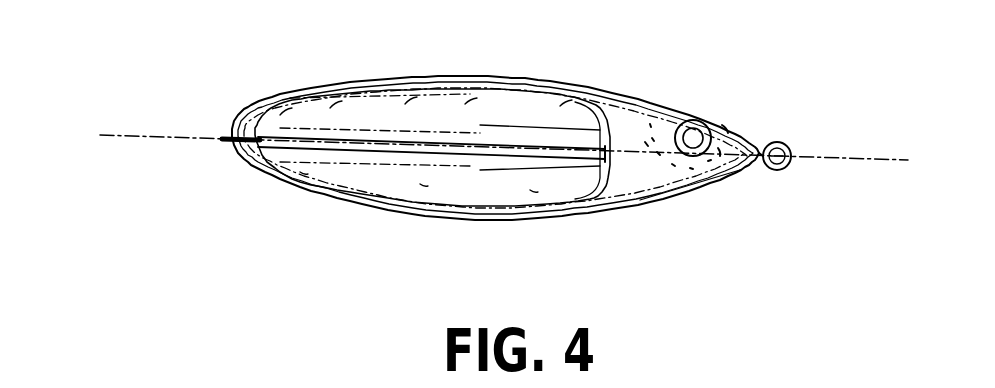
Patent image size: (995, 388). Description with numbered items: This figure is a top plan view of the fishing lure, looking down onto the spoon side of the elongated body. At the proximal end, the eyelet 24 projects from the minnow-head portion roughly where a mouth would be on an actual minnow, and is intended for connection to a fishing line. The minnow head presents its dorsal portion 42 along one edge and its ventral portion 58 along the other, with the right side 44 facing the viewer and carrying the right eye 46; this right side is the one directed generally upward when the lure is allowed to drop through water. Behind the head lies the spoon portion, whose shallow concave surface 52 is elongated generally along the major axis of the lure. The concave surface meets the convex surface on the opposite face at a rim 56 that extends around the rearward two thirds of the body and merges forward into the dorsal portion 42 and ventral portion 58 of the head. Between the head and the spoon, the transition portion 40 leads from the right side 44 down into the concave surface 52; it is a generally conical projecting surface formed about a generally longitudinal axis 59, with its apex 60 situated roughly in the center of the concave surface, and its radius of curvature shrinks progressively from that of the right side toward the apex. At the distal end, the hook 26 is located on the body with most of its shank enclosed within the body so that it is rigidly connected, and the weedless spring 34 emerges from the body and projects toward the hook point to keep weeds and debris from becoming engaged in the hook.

The eyelet 24 is at (778, 171).
The hook 26 is at (221, 138).
The weedless spring 34 is at (483, 152).
The transition portion 40 is at (586, 148).
The dorsal portion 42 is at (632, 97).
The right side 44 is at (662, 192).
The right eye 46 is at (700, 125).
The concave surface 52 is at (437, 194).
The rim 56 is at (362, 80).
The ventral portion 58 is at (690, 193).
The longitudinal axis 59 is at (140, 135).
The apex 60 is at (488, 142).